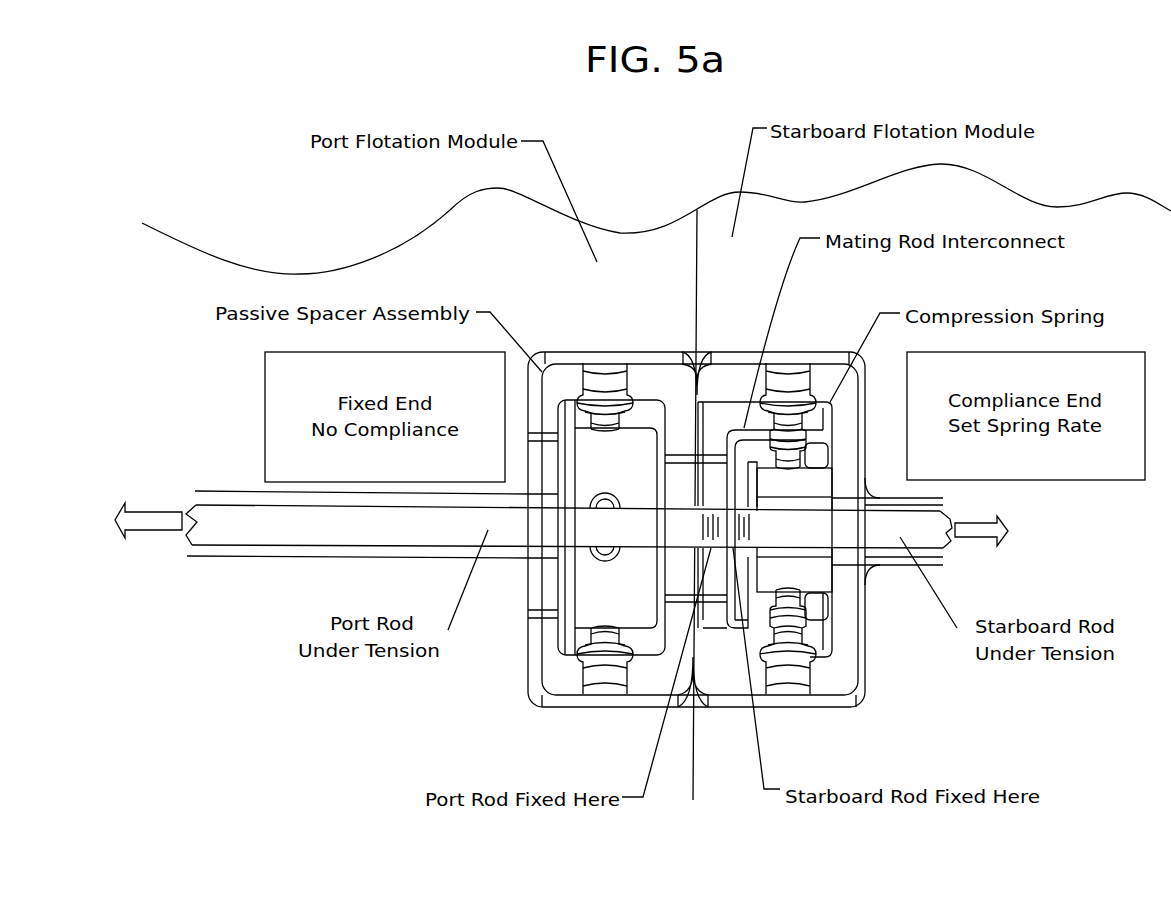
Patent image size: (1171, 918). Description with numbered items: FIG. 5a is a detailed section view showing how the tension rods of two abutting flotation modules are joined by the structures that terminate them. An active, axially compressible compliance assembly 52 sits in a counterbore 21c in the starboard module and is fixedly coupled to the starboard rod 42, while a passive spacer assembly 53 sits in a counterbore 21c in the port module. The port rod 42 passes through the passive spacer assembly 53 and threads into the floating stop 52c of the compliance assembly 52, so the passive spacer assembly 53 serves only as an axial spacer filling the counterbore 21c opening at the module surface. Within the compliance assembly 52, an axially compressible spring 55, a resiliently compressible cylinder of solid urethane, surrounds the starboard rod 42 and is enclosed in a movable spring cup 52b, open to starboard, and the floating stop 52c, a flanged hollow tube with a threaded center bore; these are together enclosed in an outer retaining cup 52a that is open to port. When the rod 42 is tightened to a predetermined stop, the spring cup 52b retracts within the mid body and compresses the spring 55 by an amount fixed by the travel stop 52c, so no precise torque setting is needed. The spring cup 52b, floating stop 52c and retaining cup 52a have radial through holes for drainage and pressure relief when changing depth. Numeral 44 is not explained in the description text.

The rod 42 is at (210, 512).
The passive spacer assembly 44 is at (575, 372).
The compliance element 52 is at (766, 460).
The outer retaining cup 52a is at (780, 485).
The movable spring cup 52b is at (748, 443).
The floating stop 52c is at (716, 425).
The passive spacer assembly 53 is at (696, 664).
The axially compressible spring element 55 is at (813, 580).
The counterbore 21c is at (596, 712).